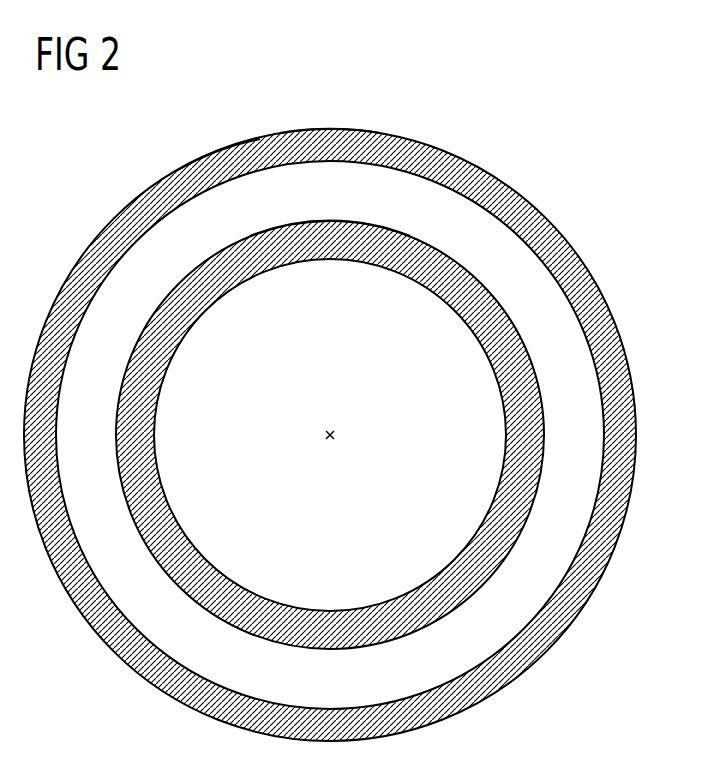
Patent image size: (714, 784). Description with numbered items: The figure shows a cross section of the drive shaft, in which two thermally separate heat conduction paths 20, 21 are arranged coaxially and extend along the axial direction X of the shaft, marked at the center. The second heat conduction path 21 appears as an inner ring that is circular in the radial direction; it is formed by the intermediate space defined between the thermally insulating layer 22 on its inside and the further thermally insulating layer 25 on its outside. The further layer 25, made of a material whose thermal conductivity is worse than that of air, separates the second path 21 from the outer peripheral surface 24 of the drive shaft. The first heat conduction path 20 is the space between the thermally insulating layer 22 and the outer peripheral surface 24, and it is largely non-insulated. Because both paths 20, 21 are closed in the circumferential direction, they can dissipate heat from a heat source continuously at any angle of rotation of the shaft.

The first heat conduction path 20 is at (483, 376).
The second heat conduction path 21 is at (577, 470).
The thermally insulating layer 22 is at (283, 238).
The outer peripheral surface 24 is at (352, 130).
The further thermally insulating layer 25 is at (222, 160).
The axial direction X is at (330, 434).